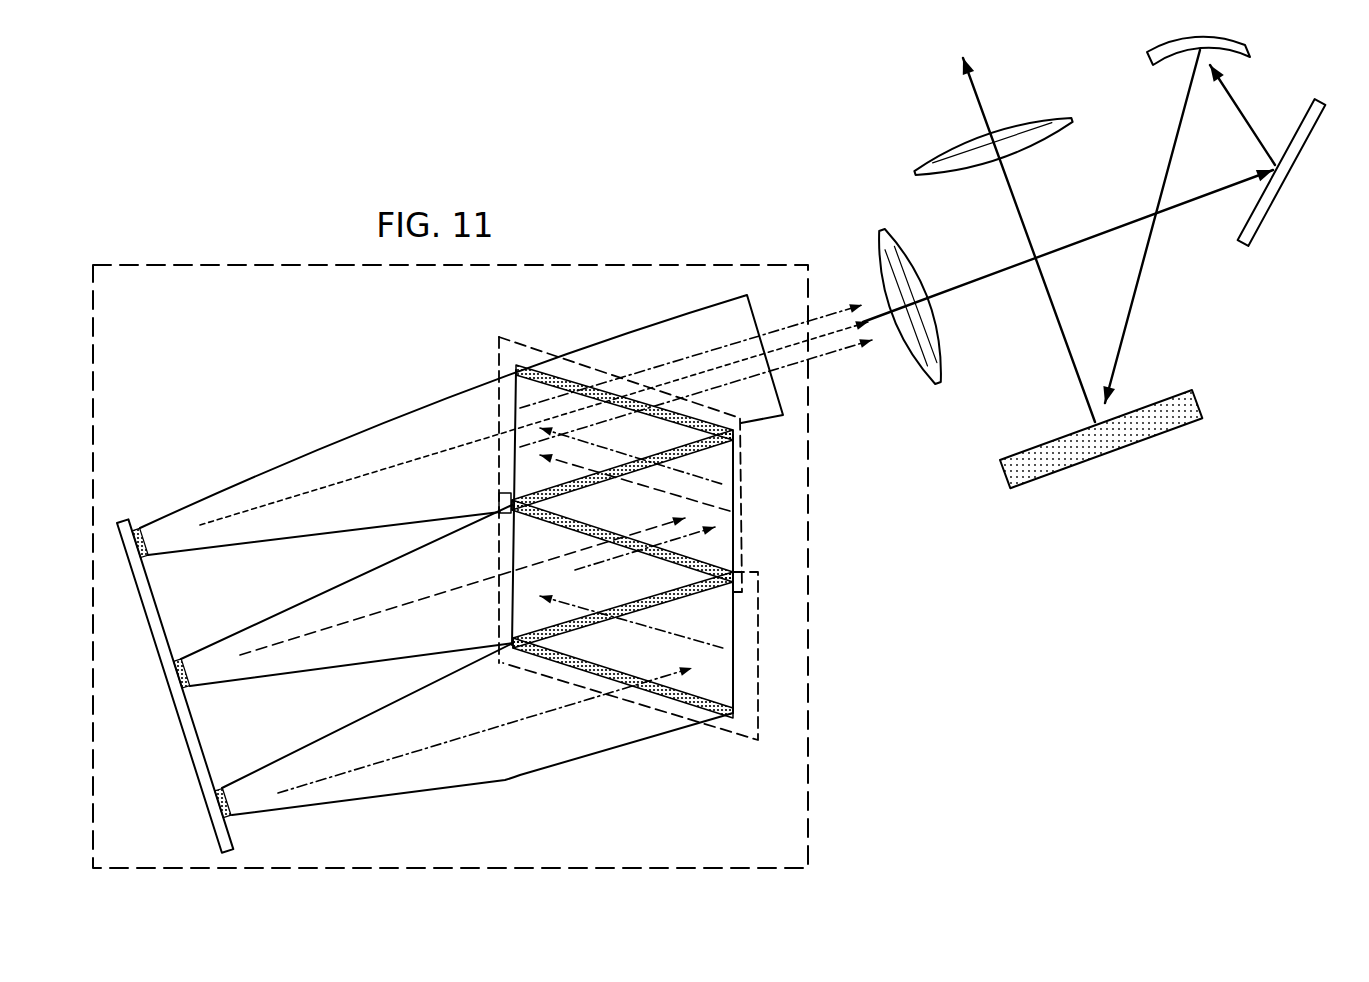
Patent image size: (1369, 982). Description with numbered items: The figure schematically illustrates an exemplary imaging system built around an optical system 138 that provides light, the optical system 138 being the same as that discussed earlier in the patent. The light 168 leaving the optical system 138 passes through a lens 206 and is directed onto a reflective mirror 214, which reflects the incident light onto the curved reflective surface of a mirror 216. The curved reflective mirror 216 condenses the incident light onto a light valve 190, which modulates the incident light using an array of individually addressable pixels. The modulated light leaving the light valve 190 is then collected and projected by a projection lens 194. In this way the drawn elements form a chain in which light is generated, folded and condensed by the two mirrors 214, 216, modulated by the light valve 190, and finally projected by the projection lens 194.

The optical system 138 is at (227, 369).
The light 168 is at (869, 364).
The light valve 190 is at (1141, 443).
The projection lens 194 is at (1027, 119).
The collimating lens 206 is at (882, 231).
The reflective mirror 214 is at (1281, 188).
The curved reflective mirror 216 is at (1253, 43).